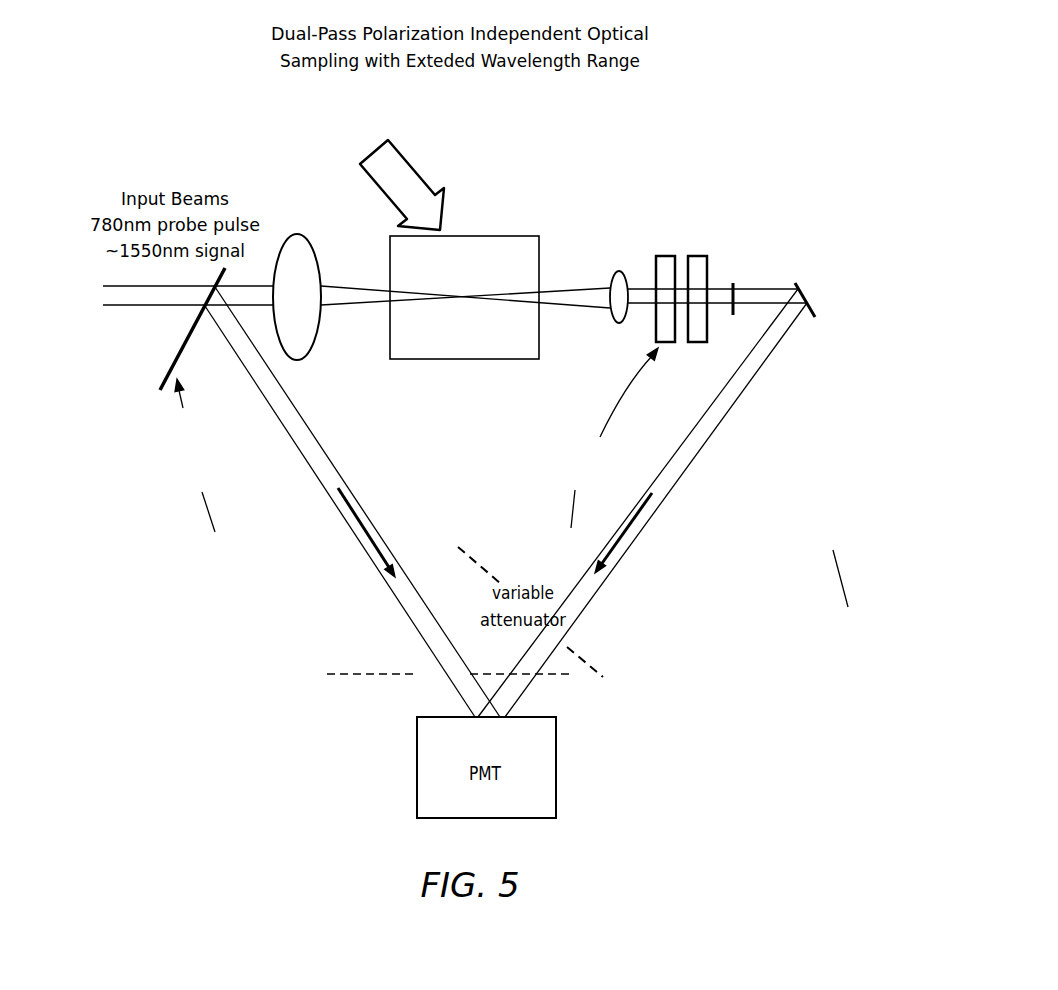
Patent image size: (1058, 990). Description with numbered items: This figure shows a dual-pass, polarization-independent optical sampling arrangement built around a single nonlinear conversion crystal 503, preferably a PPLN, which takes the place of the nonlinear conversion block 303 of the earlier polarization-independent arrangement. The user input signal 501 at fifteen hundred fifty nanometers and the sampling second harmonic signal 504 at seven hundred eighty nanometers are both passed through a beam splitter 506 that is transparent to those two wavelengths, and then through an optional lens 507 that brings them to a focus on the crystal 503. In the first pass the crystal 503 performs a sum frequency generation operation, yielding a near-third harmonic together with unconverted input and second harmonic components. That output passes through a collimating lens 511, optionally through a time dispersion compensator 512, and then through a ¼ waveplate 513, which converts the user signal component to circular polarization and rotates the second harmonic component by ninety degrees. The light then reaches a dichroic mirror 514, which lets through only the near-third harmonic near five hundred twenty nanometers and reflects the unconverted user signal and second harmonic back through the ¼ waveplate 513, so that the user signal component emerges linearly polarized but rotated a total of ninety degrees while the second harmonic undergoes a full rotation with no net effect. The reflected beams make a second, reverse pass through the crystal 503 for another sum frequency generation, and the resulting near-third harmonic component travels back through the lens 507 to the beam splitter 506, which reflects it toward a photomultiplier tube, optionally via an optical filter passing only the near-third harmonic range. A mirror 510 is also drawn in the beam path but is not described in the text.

The user input signal 501 is at (108, 285).
The sampling signal 504 is at (110, 306).
The beam splitter 506 is at (172, 376).
The lens 507 is at (308, 241).
The nonlinear conversion crystal 503 is at (480, 236).
The collimating lens 511 is at (628, 254).
The time dispersion compensator 512 is at (667, 256).
The ¼ waveplate 513 is at (712, 367).
The dichroic mirror 514 is at (742, 275).
The mirror 510 is at (811, 296).
The nonlinear conversion block 303 is at (237, 557).